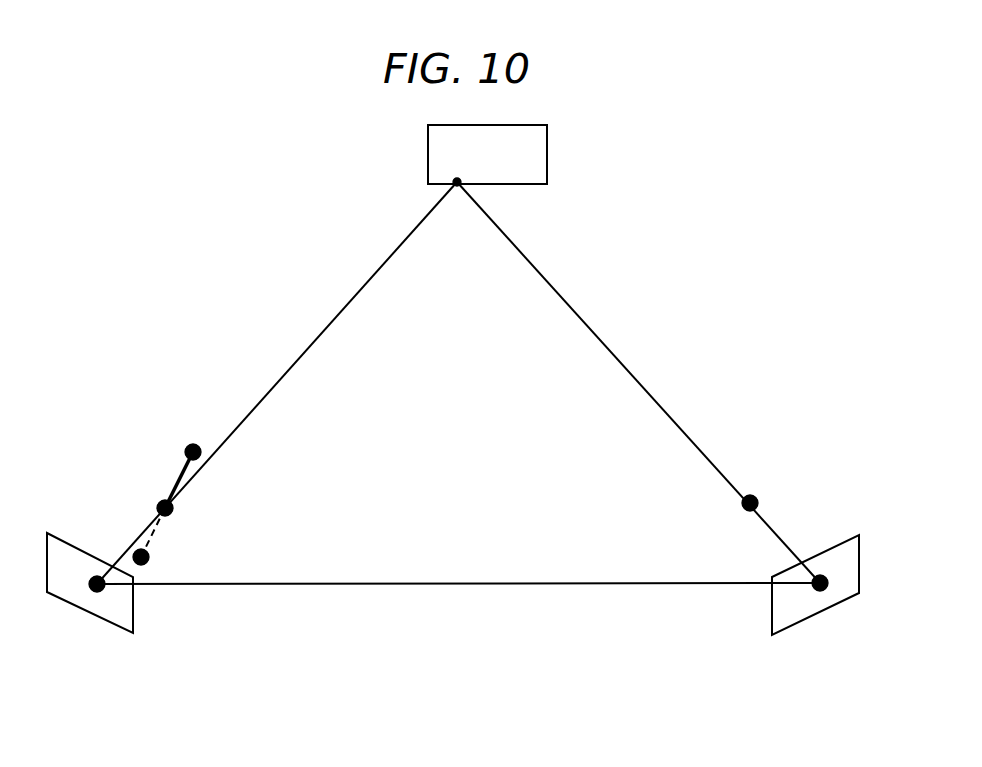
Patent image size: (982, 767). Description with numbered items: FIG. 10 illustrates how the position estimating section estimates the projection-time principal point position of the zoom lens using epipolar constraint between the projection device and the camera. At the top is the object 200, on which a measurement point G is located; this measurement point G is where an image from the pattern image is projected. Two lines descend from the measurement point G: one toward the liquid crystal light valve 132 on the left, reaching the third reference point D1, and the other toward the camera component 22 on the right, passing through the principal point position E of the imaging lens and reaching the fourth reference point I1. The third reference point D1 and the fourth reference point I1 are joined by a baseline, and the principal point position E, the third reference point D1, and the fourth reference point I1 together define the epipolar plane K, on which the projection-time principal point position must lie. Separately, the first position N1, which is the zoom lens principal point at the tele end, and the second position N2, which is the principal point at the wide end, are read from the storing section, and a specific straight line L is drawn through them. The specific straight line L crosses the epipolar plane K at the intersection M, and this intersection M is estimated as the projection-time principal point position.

The object 200 is at (547, 145).
The measurement point G is at (460, 183).
The epipolar plane K is at (411, 282).
The principal point position of the imaging lens E is at (755, 497).
The fourth reference point I1 is at (818, 573).
The camera component 22 is at (828, 608).
The third reference point D1 is at (95, 577).
The liquid crystal light valve 132 is at (117, 627).
The first position N1 is at (189, 445).
The specific straight line L is at (173, 487).
The intersection M is at (173, 510).
The second position N2 is at (150, 557).